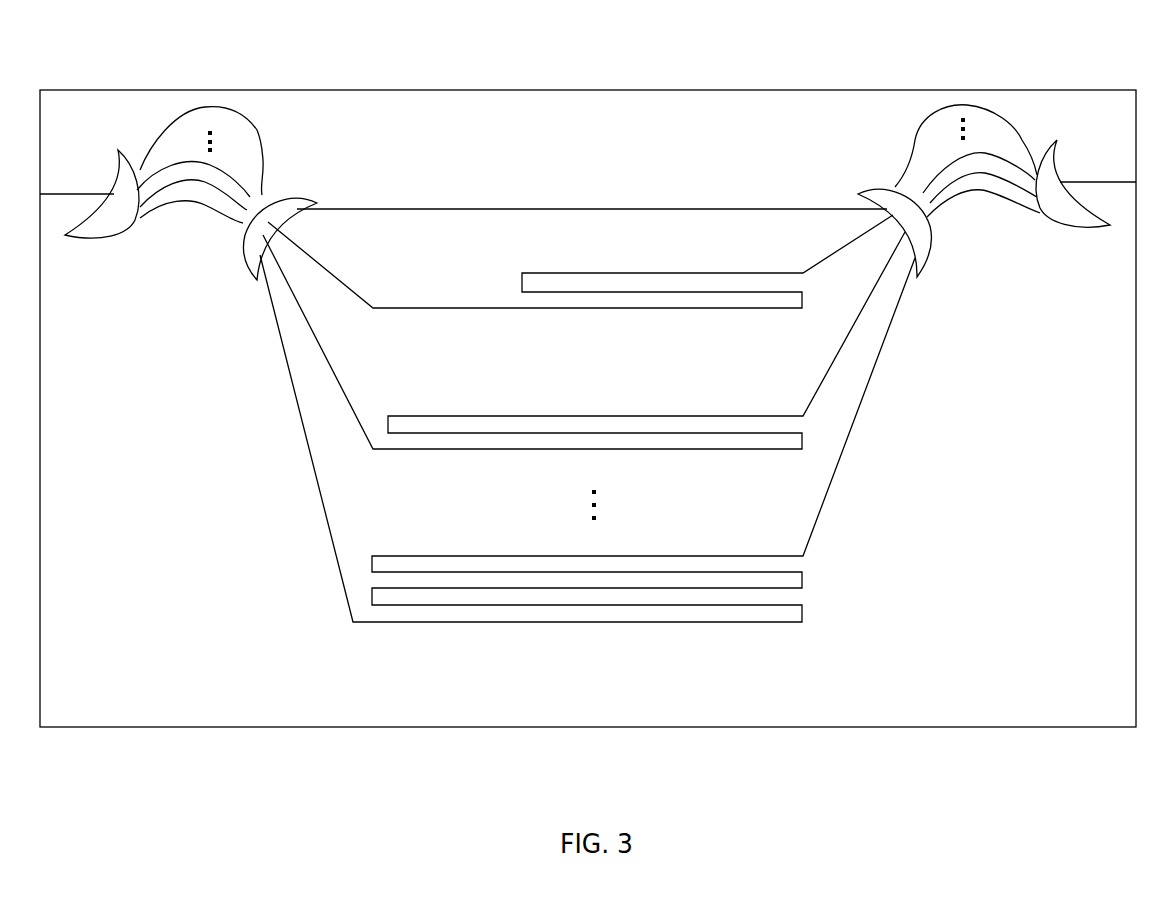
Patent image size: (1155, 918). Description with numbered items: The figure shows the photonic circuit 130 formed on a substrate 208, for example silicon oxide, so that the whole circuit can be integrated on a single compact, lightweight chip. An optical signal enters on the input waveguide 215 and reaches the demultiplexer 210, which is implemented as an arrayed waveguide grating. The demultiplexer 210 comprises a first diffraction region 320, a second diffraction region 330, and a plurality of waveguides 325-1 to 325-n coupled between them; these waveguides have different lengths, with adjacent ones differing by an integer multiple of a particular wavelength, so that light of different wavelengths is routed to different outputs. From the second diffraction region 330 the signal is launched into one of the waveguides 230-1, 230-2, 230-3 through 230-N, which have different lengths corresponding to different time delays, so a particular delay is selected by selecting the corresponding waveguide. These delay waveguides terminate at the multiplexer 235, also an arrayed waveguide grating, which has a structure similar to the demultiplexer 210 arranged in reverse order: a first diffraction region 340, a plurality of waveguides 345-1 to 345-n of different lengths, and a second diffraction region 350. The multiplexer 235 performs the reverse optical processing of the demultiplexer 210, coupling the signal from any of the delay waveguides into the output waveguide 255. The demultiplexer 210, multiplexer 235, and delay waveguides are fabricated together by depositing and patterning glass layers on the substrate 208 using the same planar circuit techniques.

The photonic circuit 130 is at (1098, 23).
The substrate 208 is at (757, 84).
The demultiplexer 210 is at (205, 220).
The input waveguide 215 is at (48, 193).
The waveguide 230-1 is at (631, 198).
The waveguide 230-2 is at (633, 269).
The waveguide 230-3 is at (633, 414).
The waveguide 230-N is at (633, 551).
The multiplexer 235 is at (979, 226).
The output waveguide 255 is at (1067, 184).
The first diffraction region 320 is at (114, 237).
The waveguide 325-1 is at (158, 215).
The waveguide 325-n is at (256, 130).
The second diffraction region 330 is at (291, 191).
The first diffraction region 340 is at (892, 183).
The waveguide 345-1 is at (955, 208).
The waveguide 345-n is at (926, 124).
The second diffraction region 350 is at (1061, 233).